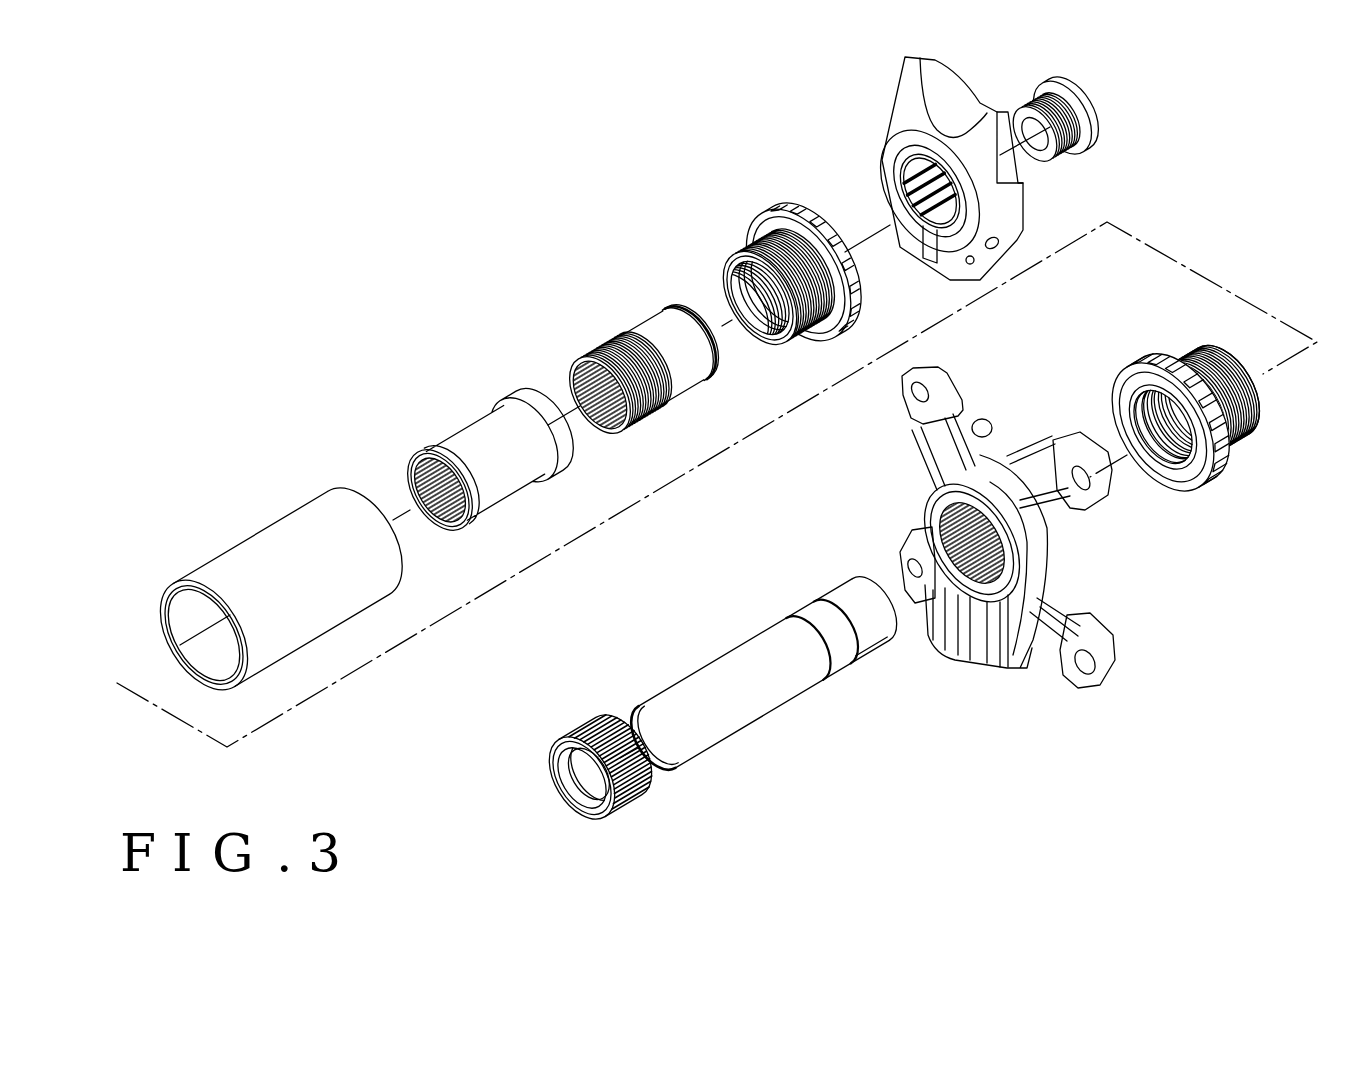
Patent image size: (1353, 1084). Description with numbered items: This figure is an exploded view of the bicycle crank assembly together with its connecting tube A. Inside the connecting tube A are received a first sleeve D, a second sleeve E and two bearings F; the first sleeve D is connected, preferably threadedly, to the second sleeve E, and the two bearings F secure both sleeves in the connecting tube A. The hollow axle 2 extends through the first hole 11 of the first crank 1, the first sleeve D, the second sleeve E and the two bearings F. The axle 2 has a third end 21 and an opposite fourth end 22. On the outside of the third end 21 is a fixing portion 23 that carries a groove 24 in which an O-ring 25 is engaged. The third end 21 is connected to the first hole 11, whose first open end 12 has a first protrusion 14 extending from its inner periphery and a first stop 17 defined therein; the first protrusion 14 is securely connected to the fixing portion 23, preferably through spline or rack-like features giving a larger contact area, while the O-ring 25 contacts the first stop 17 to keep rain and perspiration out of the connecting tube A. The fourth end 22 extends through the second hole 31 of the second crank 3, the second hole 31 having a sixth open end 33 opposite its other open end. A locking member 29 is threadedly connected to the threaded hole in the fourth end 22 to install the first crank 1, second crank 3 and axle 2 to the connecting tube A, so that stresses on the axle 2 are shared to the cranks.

The first crank 1 is at (995, 563).
The axle 2 is at (759, 640).
The second crank 3 is at (974, 180).
The first hole 11 is at (989, 530).
The first open end 12 is at (962, 503).
The first protrusion 14 is at (935, 512).
The first stop 17 is at (957, 590).
The third end 21 is at (580, 817).
The fourth end 22 is at (878, 575).
The fixing portion 23 is at (627, 803).
The groove 24 is at (610, 817).
The O-ring 25 is at (592, 782).
The locking member 29 is at (1095, 112).
The second hole 31 is at (921, 232).
The sixth open end 33 is at (900, 163).
The connecting tube A is at (273, 543).
The first sleeve D is at (647, 333).
The second sleeve E is at (467, 437).
The bearings F is at (777, 213).